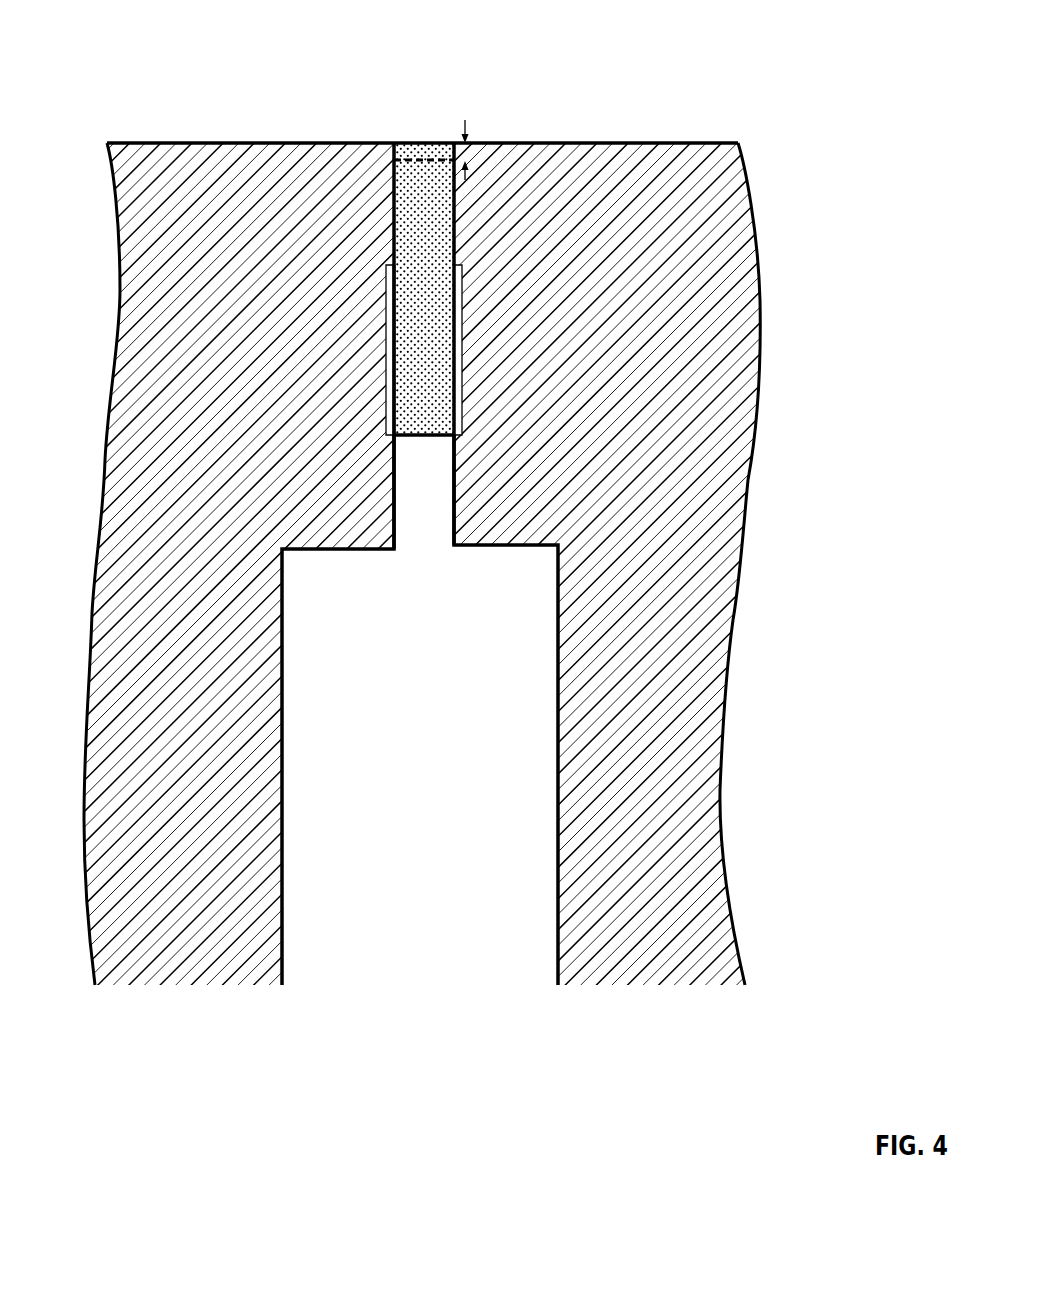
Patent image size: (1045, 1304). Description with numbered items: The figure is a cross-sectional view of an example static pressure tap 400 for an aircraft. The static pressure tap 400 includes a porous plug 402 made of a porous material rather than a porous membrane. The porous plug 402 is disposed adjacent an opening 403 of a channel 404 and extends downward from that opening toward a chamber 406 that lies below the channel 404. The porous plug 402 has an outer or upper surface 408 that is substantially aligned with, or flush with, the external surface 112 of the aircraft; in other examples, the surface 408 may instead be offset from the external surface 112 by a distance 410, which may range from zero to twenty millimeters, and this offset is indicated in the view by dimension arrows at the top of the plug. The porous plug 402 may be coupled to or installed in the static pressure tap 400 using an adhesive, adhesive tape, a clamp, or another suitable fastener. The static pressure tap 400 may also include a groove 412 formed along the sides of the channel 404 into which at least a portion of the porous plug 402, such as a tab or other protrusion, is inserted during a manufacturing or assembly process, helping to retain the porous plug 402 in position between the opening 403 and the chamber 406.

The static pressure tap 400 is at (746, 48).
The opening 403 is at (419, 42).
The external surface 112 is at (208, 135).
The porous plug 402 is at (418, 260).
The channel 404 is at (395, 458).
The chamber 406 is at (443, 723).
The surface 408 is at (423, 130).
The distance 410 is at (480, 146).
The groove 412 is at (393, 368).